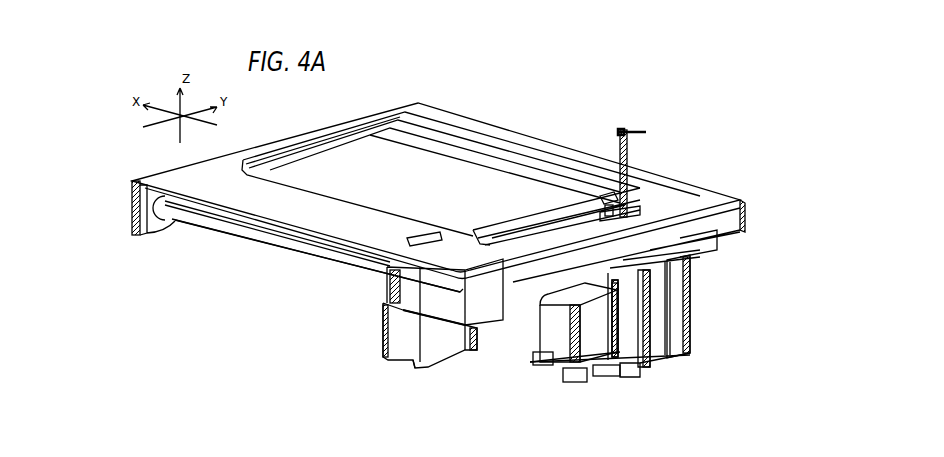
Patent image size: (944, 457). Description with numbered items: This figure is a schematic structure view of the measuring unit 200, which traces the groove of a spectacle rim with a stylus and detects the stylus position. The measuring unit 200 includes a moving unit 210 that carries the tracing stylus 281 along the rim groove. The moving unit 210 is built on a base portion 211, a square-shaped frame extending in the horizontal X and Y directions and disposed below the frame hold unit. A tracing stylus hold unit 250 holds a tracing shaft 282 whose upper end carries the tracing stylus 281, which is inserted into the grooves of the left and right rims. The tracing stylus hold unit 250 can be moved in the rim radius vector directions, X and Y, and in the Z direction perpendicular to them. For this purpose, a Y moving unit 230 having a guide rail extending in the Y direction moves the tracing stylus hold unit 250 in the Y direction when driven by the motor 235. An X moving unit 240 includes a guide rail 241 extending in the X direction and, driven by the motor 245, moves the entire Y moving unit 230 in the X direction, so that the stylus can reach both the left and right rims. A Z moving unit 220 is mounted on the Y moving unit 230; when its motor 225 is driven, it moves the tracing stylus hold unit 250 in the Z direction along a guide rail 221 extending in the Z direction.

The measuring unit 200 is at (724, 160).
The moving unit 210 is at (540, 130).
The base portion 211 is at (482, 140).
The Z moving unit 220 is at (636, 389).
The guide rail 221 is at (655, 326).
The motor 225 is at (553, 348).
The Y moving unit 230 is at (493, 222).
The motor 235 is at (403, 340).
The X moving unit 240 is at (280, 287).
The guide rail 241 is at (215, 217).
The motor 245 is at (470, 330).
The tracing stylus hold unit 250 is at (632, 204).
The tracing stylus 281 is at (628, 131).
The tracing shaft 282 is at (620, 153).